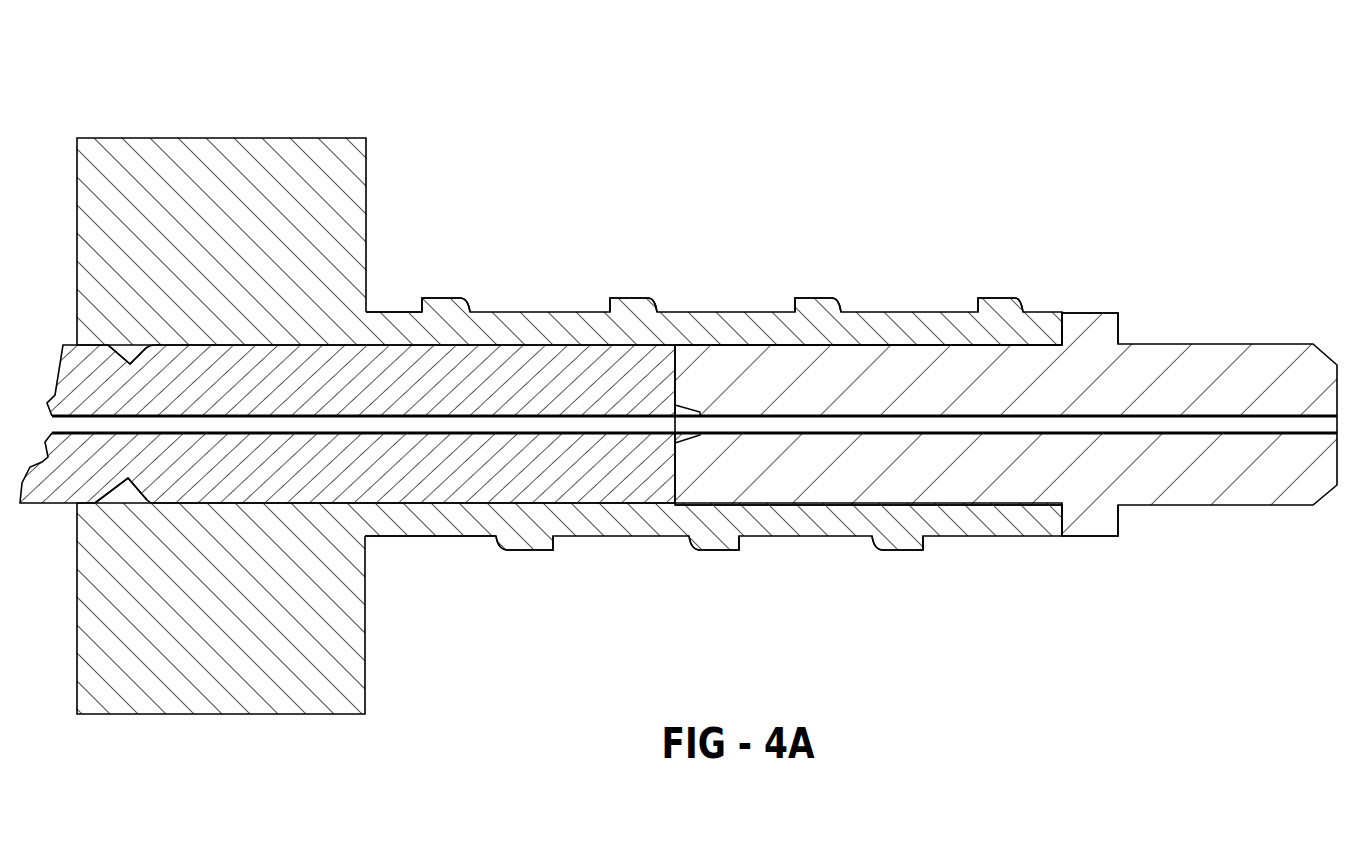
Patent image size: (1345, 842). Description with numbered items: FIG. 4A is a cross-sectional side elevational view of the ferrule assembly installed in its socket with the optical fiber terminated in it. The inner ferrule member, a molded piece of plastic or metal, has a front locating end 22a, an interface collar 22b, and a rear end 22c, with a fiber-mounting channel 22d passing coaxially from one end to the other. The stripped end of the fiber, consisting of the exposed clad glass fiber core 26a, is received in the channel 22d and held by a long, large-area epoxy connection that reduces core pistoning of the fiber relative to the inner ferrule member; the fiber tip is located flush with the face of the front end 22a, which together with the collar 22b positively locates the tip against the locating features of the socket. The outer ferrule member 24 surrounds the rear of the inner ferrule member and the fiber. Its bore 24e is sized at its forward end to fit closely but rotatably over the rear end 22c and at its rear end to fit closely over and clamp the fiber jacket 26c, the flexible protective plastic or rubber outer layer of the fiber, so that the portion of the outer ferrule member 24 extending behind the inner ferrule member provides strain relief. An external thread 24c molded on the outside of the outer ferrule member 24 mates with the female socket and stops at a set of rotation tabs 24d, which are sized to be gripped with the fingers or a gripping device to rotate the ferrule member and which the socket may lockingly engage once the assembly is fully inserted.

The outer ferrule member 24 is at (934, 312).
The rotation tabs 24d is at (336, 146).
The external thread 24c is at (622, 297).
The bore 24e is at (388, 338).
The front locating end 22a is at (1200, 383).
The interface collar 22b is at (1105, 323).
The rear end 22c is at (1008, 360).
The fiber-mounting channel 22d is at (1277, 417).
The glass fiber core 26a is at (50, 427).
The jacket 26c is at (97, 385).